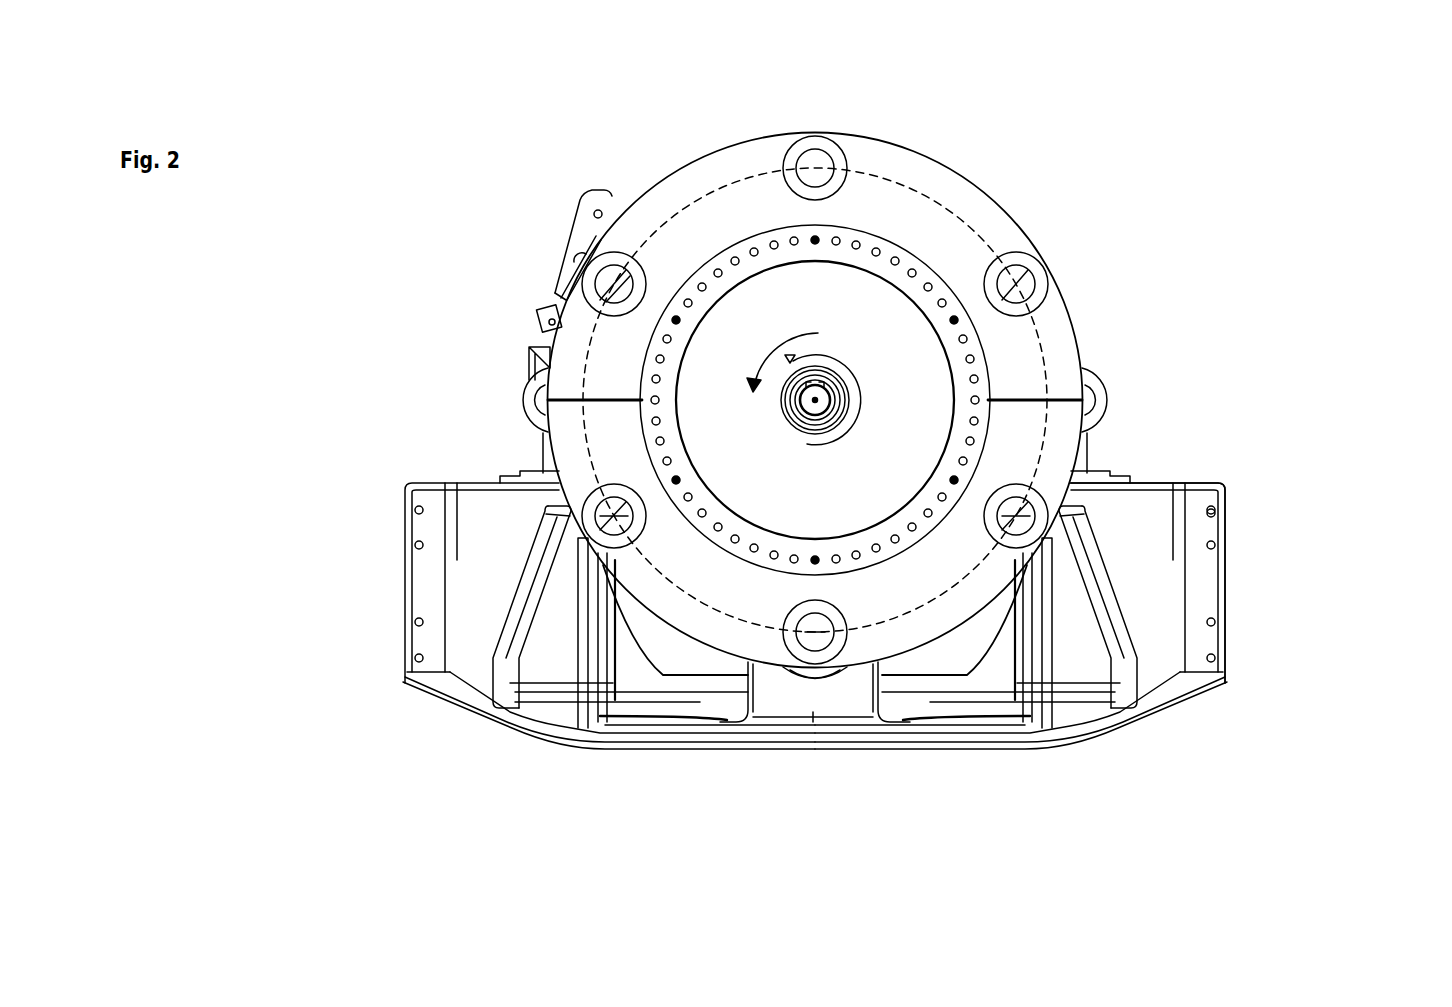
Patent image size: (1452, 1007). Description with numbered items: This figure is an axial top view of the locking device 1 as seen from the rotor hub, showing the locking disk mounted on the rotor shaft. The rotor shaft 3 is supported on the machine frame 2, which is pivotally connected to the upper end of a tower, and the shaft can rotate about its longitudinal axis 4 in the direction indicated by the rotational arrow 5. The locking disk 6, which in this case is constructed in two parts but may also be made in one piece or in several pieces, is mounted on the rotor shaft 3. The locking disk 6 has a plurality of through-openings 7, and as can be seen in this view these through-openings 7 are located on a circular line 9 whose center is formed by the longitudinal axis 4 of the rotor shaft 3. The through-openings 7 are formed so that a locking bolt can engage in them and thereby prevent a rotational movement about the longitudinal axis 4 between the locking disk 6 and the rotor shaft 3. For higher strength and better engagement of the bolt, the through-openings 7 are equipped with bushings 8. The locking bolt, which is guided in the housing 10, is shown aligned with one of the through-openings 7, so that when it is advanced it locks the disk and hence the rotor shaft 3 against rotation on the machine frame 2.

The locking device 1 is at (362, 456).
The machine frame 2 is at (1138, 530).
The rotor shaft 3 is at (835, 305).
The longitudinal axis 4 is at (817, 400).
The rotational arrow 5 is at (765, 348).
The locking disk 6 is at (715, 165).
The through-openings 7 is at (812, 177).
The bolt hole 8 is at (818, 137).
The circular line 9 is at (1050, 345).
The housing 10 is at (812, 675).